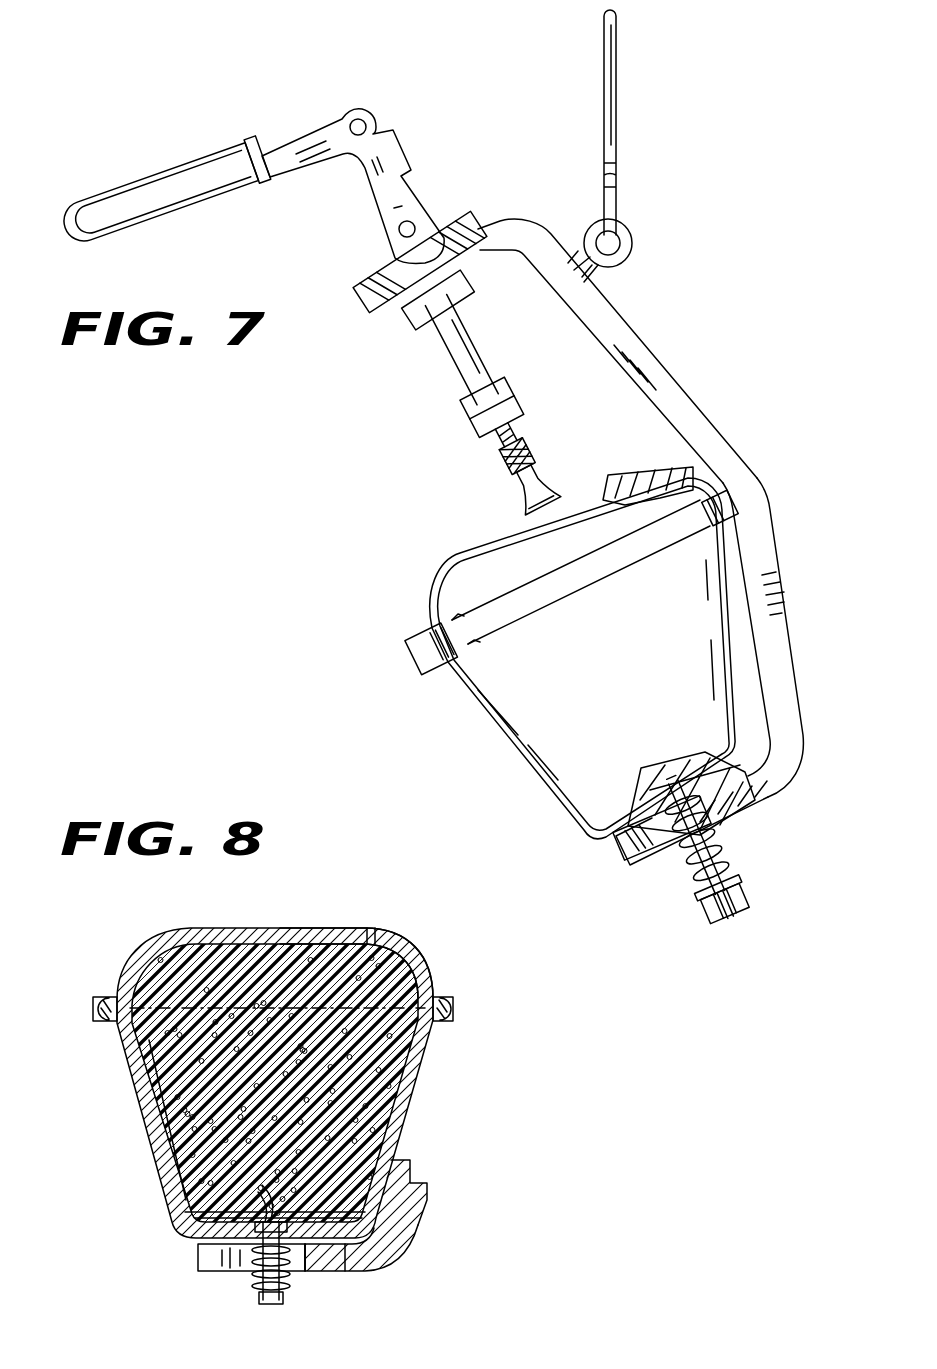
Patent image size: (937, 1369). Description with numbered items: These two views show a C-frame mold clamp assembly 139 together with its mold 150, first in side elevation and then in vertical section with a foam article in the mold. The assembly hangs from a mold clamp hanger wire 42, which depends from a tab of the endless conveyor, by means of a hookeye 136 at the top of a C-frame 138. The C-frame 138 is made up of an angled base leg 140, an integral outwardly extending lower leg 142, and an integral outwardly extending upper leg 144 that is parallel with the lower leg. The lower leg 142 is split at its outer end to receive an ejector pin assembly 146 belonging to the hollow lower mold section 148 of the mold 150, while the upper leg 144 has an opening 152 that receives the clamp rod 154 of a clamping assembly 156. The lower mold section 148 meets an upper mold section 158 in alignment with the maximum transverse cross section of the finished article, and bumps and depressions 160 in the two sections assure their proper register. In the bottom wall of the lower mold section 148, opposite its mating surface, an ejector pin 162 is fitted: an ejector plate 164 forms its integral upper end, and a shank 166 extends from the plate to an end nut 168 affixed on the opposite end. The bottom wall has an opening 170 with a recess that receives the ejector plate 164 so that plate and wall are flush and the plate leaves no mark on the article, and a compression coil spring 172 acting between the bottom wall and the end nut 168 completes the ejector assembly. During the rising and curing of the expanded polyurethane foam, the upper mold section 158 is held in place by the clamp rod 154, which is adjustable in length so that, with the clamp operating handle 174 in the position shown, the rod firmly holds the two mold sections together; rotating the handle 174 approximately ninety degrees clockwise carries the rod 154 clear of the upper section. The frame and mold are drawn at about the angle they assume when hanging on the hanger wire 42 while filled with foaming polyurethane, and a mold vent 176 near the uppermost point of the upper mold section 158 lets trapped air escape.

In FIG. 7, the mold clamp hanger wire 42 is at (617, 104).
In FIG. 7, the hookeye 136 is at (618, 228).
In FIG. 7, the C-frame 138 is at (660, 384).
In FIG. 8, the C-frame 138 is at (410, 1233).
In FIG. 7, the C-frame mold clamp assembly 139 is at (660, 276).
In FIG. 7, the angled base leg 140 is at (740, 460).
In FIG. 8, the angled base leg 140 is at (428, 1173).
In FIG. 7, the lower leg 142 is at (752, 803).
In FIG. 8, the lower leg 142 is at (360, 1263).
In FIG. 7, the upper leg 144 is at (362, 276).
In FIG. 7, the ejector pin assembly 146 is at (688, 902).
In FIG. 8, the ejector pin assembly 146 is at (226, 1278).
In FIG. 7, the lower mold section 148 is at (527, 732).
In FIG. 8, the lower mold section 148 is at (410, 1100).
In FIG. 7, the mold 150 is at (410, 655).
In FIG. 8, the mold 150 is at (110, 975).
In FIG. 7, the opening 152 is at (430, 233).
In FIG. 7, the clamp rod 154 is at (467, 372).
In FIG. 7, the clamping assembly 156 is at (420, 148).
In FIG. 7, the upper mold section 158 is at (456, 560).
In FIG. 8, the upper mold section 158 is at (405, 952).
In FIG. 7, the bumps and depressions 160 is at (720, 508).
In FIG. 8, the bumps and depressions 160 is at (442, 997).
In FIG. 7, the ejector pin 162 is at (718, 863).
In FIG. 8, the ejector pin 162 is at (262, 1290).
In FIG. 7, the ejector plate 164 is at (685, 768).
In FIG. 8, the ejector plate 164 is at (170, 1163).
In FIG. 8, the shank 166 is at (210, 1216).
In FIG. 7, the end nut 168 is at (744, 900).
In FIG. 8, the opening 170 is at (273, 1220).
In FIG. 7, the compression coil spring 172 is at (655, 863).
In FIG. 8, the compression coil spring 172 is at (290, 1276).
In FIG. 7, the clamp operating handle 174 is at (142, 190).
In FIG. 7, the mold vent 176 is at (648, 480).
In FIG. 8, the mold vent 176 is at (375, 928).